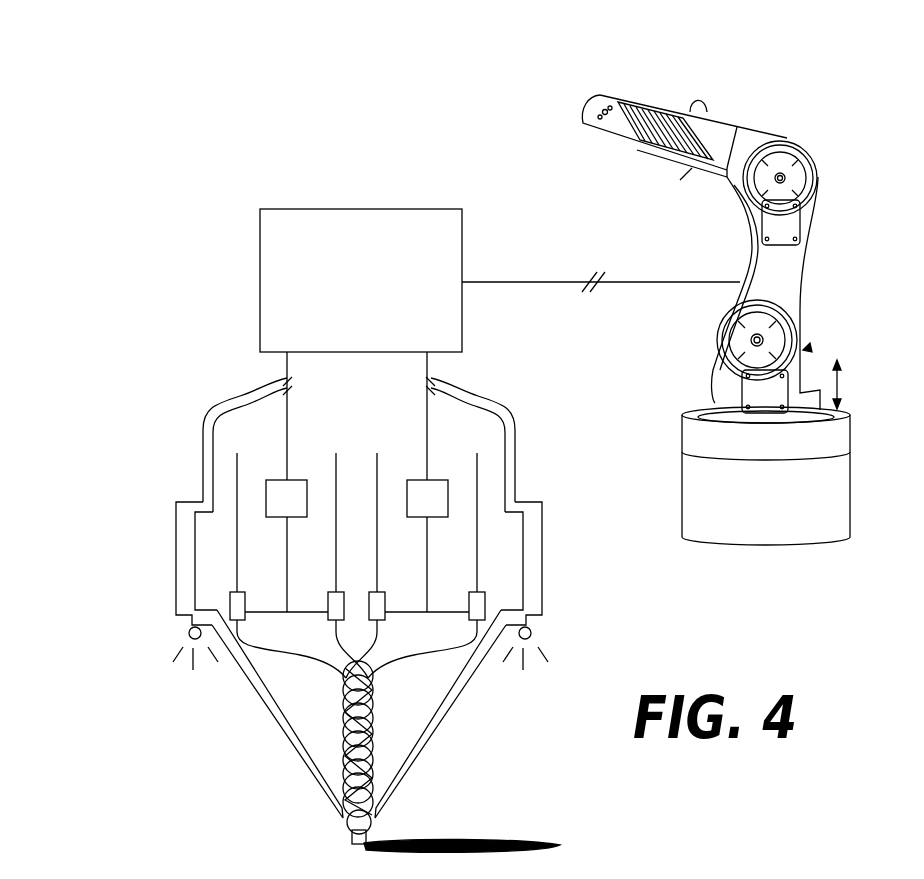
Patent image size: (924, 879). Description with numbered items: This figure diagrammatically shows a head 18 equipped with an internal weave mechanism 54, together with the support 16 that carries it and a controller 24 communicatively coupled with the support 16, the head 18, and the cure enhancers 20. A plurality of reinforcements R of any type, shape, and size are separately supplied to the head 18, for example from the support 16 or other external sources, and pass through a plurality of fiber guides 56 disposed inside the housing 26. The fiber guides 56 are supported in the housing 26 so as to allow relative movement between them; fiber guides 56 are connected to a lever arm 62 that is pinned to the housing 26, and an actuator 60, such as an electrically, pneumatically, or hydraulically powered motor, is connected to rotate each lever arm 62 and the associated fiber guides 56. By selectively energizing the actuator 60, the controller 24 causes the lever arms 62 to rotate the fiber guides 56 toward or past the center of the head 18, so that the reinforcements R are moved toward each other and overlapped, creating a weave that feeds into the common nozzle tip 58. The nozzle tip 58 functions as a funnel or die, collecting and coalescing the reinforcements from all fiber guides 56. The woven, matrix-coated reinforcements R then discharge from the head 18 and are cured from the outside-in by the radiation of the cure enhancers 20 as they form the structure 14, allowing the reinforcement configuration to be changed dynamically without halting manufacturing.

The structure 14 is at (470, 843).
The support 16 is at (790, 262).
The head 18 is at (537, 410).
The cure enhancer 20 is at (188, 634).
The controller 24 is at (350, 301).
The housing 26 is at (541, 572).
The weave mechanism 54 is at (236, 437).
The fiber guide 56 is at (232, 592).
The nozzle tip 58 is at (330, 792).
The actuator 60 is at (277, 508).
The lever arm 62 is at (300, 613).
The filament F is at (376, 714).
The reinforcement R is at (240, 470).